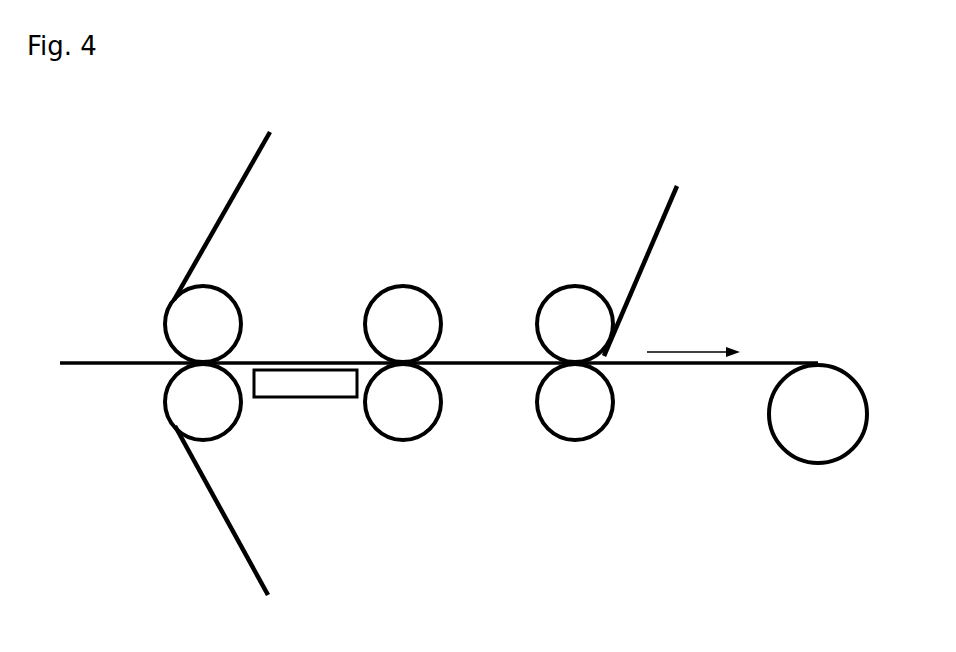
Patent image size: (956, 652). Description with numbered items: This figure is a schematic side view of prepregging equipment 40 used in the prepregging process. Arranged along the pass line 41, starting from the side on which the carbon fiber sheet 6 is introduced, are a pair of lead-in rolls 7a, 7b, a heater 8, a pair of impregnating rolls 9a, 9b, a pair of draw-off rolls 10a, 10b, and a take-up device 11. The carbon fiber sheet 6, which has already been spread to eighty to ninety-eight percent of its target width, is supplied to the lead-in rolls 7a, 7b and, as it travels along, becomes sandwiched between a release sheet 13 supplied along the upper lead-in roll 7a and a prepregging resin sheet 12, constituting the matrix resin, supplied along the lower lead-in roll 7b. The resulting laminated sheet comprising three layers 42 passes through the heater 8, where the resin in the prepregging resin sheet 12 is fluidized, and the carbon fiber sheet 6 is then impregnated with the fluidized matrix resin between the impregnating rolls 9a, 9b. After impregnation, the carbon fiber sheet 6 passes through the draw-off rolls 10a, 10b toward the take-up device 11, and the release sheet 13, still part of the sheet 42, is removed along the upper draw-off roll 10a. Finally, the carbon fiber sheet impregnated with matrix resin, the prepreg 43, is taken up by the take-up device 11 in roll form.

The carbon fiber sheet 6 is at (115, 361).
The upper lead-in roll 7a is at (227, 297).
The lower lead-in roll 7b is at (218, 440).
The heater 8 is at (293, 397).
The impregnating roll 9a is at (405, 282).
The impregnating roll 9b is at (412, 442).
The upper draw-off roll 10a is at (570, 282).
The lower draw-off roll 10b is at (573, 442).
The take-up device 11 is at (780, 450).
The prepregging resin sheet 12 is at (217, 510).
The release sheet 13 is at (217, 217).
The prepregging equipment 40 is at (496, 190).
The pass line 41 is at (673, 350).
The laminated sheet comprising three layers 42 is at (253, 360).
The prepreg 43 is at (710, 365).